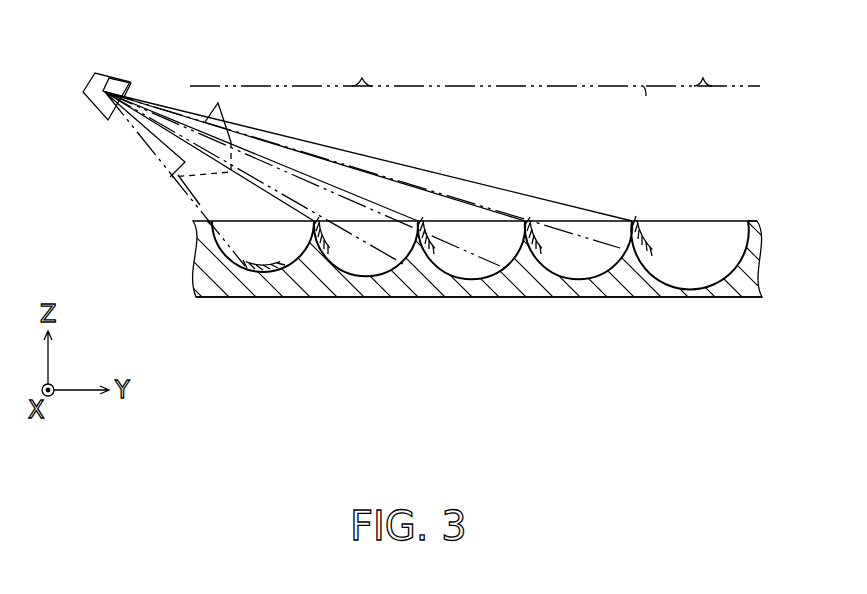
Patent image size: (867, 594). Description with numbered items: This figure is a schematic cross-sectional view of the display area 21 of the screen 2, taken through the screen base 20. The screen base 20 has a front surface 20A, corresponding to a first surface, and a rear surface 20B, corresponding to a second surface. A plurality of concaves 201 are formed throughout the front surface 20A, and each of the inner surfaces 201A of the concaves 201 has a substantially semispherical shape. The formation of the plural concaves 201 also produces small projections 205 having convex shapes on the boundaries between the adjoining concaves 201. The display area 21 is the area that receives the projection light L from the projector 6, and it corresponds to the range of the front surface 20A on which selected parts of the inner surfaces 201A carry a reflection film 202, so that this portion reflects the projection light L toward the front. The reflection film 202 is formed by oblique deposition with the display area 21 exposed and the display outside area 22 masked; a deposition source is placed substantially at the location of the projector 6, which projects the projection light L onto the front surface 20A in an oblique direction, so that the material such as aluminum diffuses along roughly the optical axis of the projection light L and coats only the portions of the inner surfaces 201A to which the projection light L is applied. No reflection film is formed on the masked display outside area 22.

The projector 6 is at (112, 80).
The projection light L is at (170, 184).
The screen 2 is at (547, 70).
The screen base 20 is at (752, 268).
The front surface 20A is at (752, 220).
The rear surface 20B is at (735, 298).
The display area 21 is at (418, 71).
The display outside area 22 is at (703, 67).
The concaves 201 is at (477, 240).
The inner surfaces 201A is at (477, 240).
The reflection film 202 is at (266, 252).
The small projections 205 is at (314, 220).